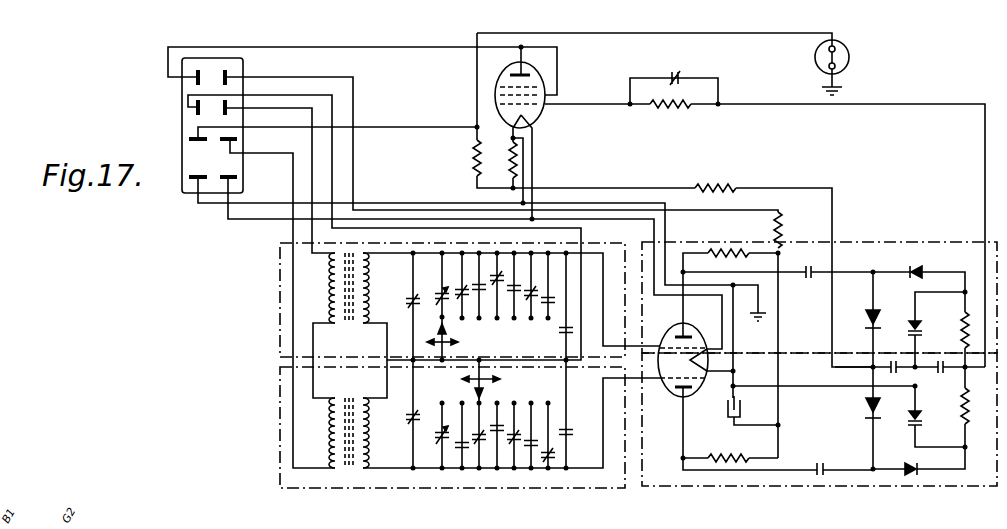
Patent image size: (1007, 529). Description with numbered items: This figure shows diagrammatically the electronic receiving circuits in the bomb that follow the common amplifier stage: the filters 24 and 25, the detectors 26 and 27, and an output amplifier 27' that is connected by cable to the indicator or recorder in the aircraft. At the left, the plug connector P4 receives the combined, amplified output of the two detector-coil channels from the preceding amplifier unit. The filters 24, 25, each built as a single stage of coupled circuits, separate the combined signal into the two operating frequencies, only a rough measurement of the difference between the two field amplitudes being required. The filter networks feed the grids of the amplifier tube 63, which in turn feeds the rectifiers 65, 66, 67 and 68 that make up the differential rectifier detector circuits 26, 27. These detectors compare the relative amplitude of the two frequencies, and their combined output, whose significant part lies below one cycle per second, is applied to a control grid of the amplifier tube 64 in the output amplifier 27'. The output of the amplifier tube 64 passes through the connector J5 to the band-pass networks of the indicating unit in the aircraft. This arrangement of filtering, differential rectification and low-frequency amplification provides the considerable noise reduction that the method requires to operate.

The plug connector P4 is at (195, 125).
The output amplifier 27' is at (654, 21).
The amplifier tube 64 is at (546, 80).
The connector J5 is at (840, 67).
The filter 24 is at (280, 305).
The filter 25 is at (280, 432).
The detector 26 is at (936, 230).
The detector 27 is at (819, 432).
The amplifier tube 63 is at (668, 392).
The rectifier 65 is at (911, 263).
The rectifier 66 is at (883, 319).
The rectifier 67 is at (860, 418).
The rectifier 68 is at (923, 463).